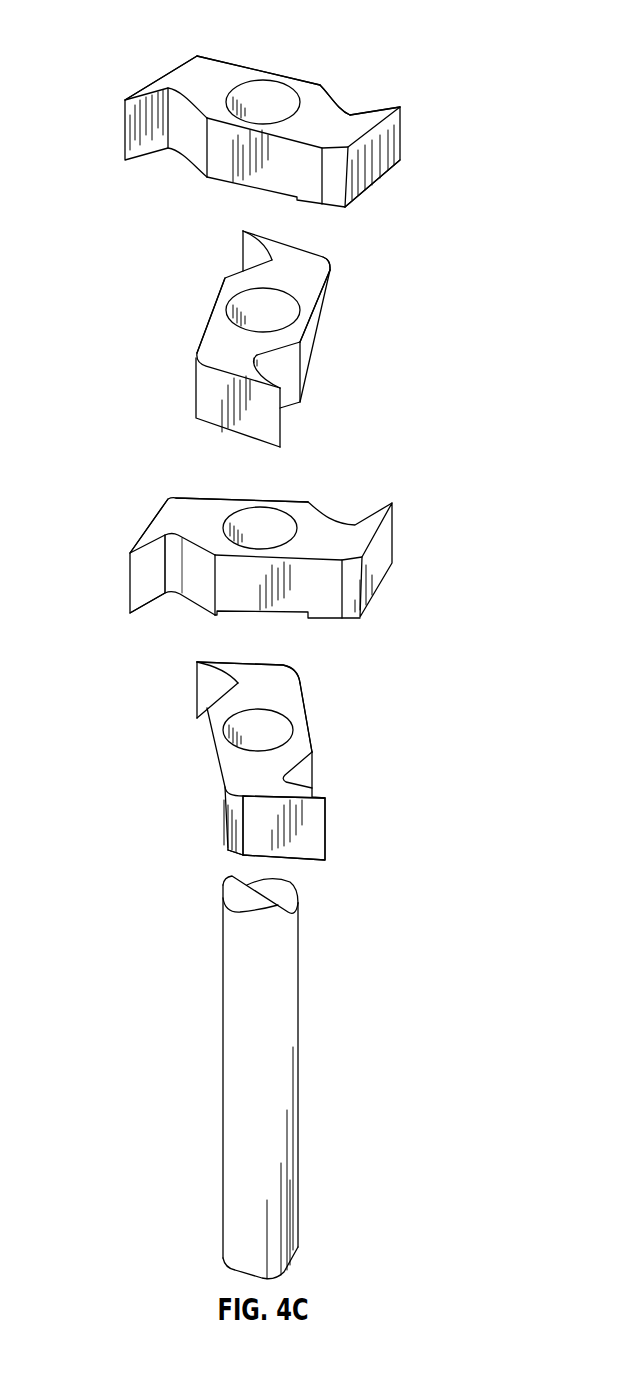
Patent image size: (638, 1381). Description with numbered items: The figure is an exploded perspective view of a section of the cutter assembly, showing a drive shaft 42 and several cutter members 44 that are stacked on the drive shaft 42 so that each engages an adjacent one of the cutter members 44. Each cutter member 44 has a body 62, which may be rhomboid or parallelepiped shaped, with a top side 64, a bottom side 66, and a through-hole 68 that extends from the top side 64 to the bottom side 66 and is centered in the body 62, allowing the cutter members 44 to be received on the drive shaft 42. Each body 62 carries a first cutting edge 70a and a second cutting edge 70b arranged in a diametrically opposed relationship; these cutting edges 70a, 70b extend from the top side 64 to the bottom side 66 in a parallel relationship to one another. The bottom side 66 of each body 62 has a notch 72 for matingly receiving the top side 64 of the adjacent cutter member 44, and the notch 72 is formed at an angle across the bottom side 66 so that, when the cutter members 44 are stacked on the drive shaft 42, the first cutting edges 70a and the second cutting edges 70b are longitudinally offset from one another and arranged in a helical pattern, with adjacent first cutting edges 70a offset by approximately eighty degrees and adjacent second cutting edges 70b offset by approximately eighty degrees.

The drive shaft 42 is at (298, 1082).
The cutter member 44 is at (230, 58).
The body 62 is at (162, 70).
The top side 64 is at (313, 82).
The bottom side 66 is at (360, 193).
The through-hole 68 is at (280, 81).
The first cutting edge 70a is at (125, 128).
The second cutting edge 70b is at (399, 134).
The notch 72 is at (218, 178).